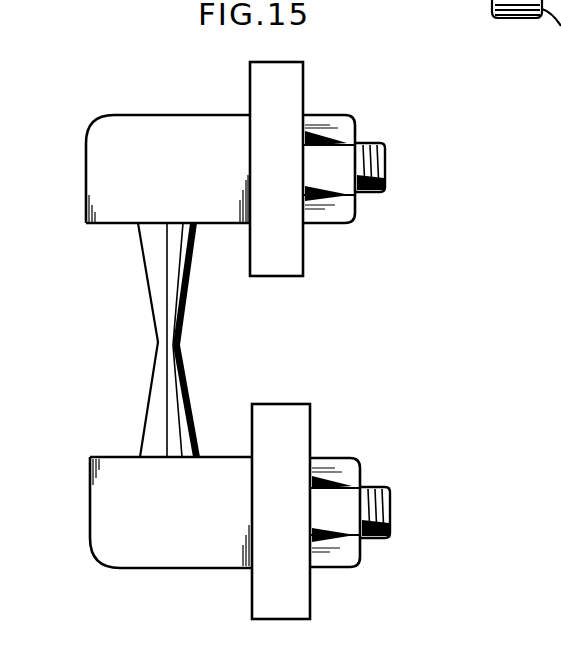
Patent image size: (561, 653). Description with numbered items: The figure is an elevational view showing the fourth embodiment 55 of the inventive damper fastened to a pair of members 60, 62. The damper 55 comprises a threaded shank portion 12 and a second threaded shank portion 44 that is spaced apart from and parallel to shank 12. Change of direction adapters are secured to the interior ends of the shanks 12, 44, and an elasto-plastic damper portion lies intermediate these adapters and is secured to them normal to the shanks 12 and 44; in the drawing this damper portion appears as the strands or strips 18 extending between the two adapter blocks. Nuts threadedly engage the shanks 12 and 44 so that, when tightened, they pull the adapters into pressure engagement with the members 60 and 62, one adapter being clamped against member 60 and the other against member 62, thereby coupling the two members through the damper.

The threaded shank portion 12 is at (390, 512).
The wire 18 is at (160, 346).
The threaded shank portion 44 is at (385, 170).
The fourth embodiment of the damper 55 is at (130, 254).
The member 60 is at (295, 253).
The member 62 is at (287, 442).